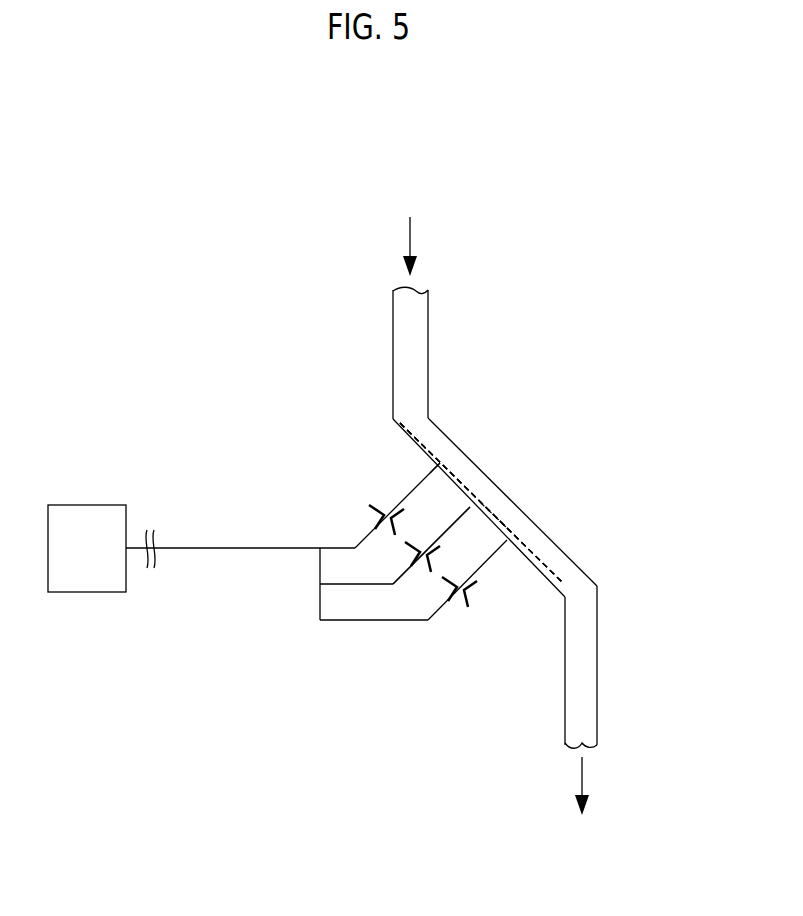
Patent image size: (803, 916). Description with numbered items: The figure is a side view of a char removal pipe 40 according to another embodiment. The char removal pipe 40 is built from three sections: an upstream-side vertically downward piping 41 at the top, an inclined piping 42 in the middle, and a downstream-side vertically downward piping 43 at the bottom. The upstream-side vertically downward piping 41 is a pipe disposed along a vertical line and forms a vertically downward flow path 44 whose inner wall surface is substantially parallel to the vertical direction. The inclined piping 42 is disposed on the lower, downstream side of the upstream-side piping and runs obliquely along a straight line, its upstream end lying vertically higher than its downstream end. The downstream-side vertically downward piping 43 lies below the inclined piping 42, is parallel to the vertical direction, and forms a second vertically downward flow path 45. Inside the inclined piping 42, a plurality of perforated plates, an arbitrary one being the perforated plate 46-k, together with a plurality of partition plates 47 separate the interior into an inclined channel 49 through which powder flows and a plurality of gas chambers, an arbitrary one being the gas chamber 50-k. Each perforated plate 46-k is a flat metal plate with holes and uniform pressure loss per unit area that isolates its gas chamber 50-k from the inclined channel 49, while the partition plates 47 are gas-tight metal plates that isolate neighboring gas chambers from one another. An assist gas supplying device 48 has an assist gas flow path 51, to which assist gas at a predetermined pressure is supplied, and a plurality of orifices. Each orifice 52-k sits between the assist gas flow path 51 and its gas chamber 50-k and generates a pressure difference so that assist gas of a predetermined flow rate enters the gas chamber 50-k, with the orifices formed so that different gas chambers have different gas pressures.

The char removal pipe 40 is at (188, 354).
The upstream-side vertically downward piping 41 is at (393, 318).
The inclined piping 42 is at (440, 428).
The downstream-side vertically downward piping 43 is at (565, 710).
The vertically downward flow path 44 is at (413, 330).
The vertically downward flow path 45 is at (588, 683).
The perforated plate 46-k is at (507, 524).
The partition plates 47 is at (453, 483).
The assist gas supplying device 48 is at (211, 588).
The inclined channel 49 is at (507, 514).
The gas chamber 50-k is at (477, 488).
The assist gas flow path 51 is at (276, 548).
The orifice 52-k is at (420, 578).